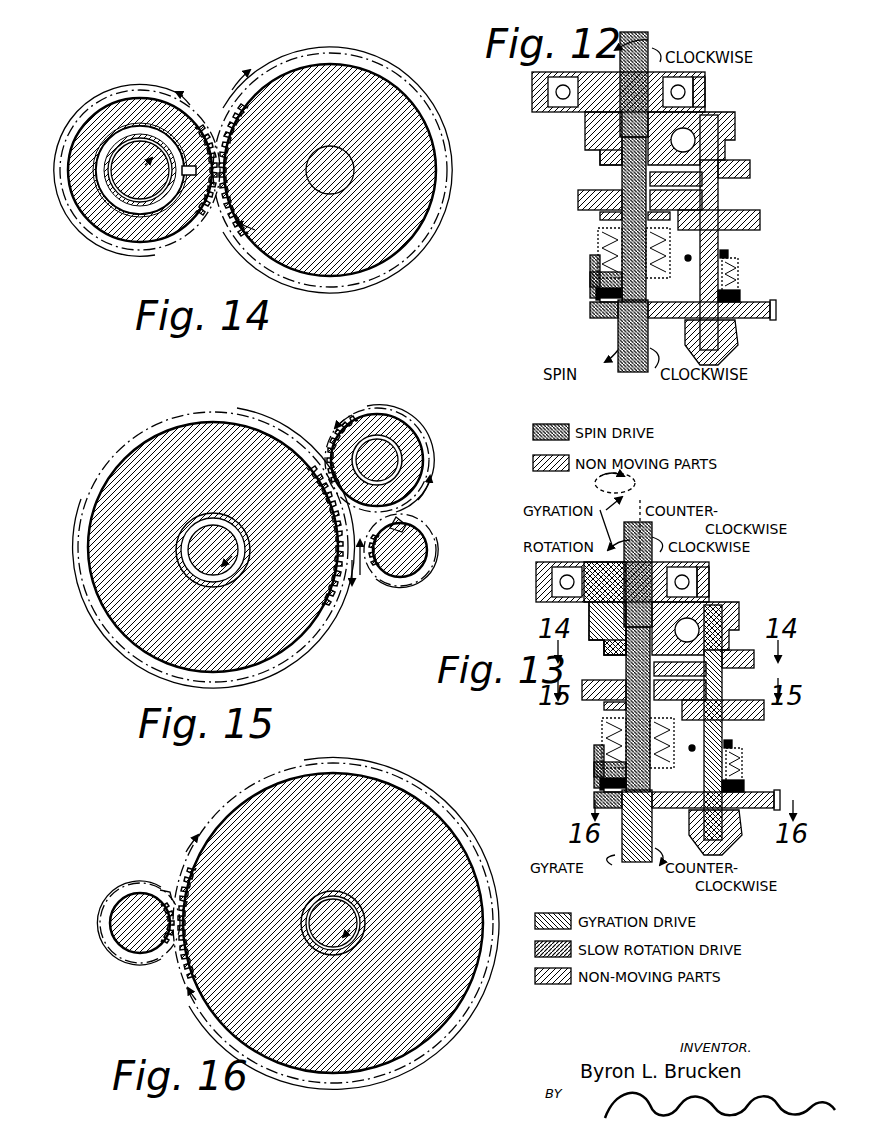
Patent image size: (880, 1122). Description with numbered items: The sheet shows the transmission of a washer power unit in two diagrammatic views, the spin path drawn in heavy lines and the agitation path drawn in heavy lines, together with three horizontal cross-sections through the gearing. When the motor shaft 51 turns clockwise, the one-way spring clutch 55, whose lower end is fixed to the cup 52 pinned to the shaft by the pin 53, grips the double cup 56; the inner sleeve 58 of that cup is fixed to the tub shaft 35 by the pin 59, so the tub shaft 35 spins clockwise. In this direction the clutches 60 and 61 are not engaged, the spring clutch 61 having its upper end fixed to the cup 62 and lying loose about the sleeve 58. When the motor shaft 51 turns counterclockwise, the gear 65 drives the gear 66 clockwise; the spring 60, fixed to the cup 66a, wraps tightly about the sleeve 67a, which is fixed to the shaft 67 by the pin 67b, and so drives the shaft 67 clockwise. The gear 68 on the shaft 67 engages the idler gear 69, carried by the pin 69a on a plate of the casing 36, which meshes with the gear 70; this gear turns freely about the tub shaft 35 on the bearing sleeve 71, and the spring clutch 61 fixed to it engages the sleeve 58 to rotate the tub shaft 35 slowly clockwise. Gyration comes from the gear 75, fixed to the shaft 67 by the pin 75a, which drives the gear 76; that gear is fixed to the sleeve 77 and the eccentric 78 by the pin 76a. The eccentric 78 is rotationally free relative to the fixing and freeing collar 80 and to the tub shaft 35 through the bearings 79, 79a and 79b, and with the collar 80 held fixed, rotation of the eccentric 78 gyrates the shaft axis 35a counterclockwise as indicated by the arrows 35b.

In FIG. 14, the tub shaft 35 is at (128, 190).
In FIG. 15, the tub shaft 35 is at (222, 538).
In FIG. 12, the tub shaft 35 is at (648, 42).
In FIG. 13, the tub shaft 35 is at (678, 657).
In FIG. 13, the shaft axis 35a is at (636, 482).
In FIG. 13, the arrows 35b is at (596, 486).
In FIG. 12, the casing 36 is at (740, 118).
In FIG. 13, the casing 36 is at (715, 622).
In FIG. 16, the motor shaft 51 is at (142, 942).
In FIG. 12, the motor shaft 51 is at (616, 341).
In FIG. 13, the motor shaft 51 is at (652, 826).
In FIG. 12, the cup 52 is at (598, 293).
In FIG. 13, the cup 52 is at (597, 780).
In FIG. 12, the pin 53 is at (606, 300).
In FIG. 13, the pin 53 is at (592, 797).
In FIG. 12, the one-way spring clutch 55 is at (590, 260).
In FIG. 13, the one-way spring clutch 55 is at (586, 754).
In FIG. 12, the double cup 56 is at (592, 276).
In FIG. 13, the double cup 56 is at (597, 769).
In FIG. 12, the inner sleeve 58 is at (598, 240).
In FIG. 13, the inner sleeve 58 is at (597, 742).
In FIG. 12, the pin 59 is at (668, 240).
In FIG. 12, the one-way spring clutch 60 is at (738, 278).
In FIG. 13, the one-way spring clutch 60 is at (762, 766).
In FIG. 12, the spring clutch 61 is at (648, 222).
In FIG. 13, the spring clutch 61 is at (675, 743).
In FIG. 12, the cup 62 is at (600, 215).
In FIG. 13, the cup 62 is at (597, 706).
In FIG. 16, the gear 65 is at (166, 893).
In FIG. 12, the gear 65 is at (612, 312).
In FIG. 13, the gear 65 is at (608, 809).
In FIG. 16, the gear 66 is at (428, 828).
In FIG. 12, the gear 66 is at (776, 310).
In FIG. 13, the gear 66 is at (716, 810).
In FIG. 12, the cup 66a is at (740, 296).
In FIG. 13, the cup 66a is at (748, 782).
In FIG. 14, the shaft 67 is at (347, 178).
In FIG. 15, the shaft 67 is at (427, 562).
In FIG. 16, the shaft 67 is at (345, 910).
In FIG. 12, the shaft 67 is at (720, 232).
In FIG. 13, the shaft 67 is at (727, 730).
In FIG. 12, the sleeve 67a is at (722, 250).
In FIG. 13, the sleeve 67a is at (730, 744).
In FIG. 12, the pin 67b is at (728, 258).
In FIG. 13, the pin 67b is at (747, 755).
In FIG. 15, the gear 68 is at (416, 514).
In FIG. 12, the gear 68 is at (705, 200).
In FIG. 13, the gear 68 is at (708, 686).
In FIG. 15, the idler gear 69 is at (380, 435).
In FIG. 12, the idler gear 69 is at (690, 182).
In FIG. 13, the idler gear 69 is at (680, 647).
In FIG. 15, the pin 69a is at (392, 455).
In FIG. 15, the gear 70 is at (297, 448).
In FIG. 12, the gear 70 is at (590, 195).
In FIG. 13, the gear 70 is at (597, 681).
In FIG. 15, the bearing sleeve 71 is at (212, 588).
In FIG. 14, the gear 75 is at (390, 238).
In FIG. 12, the gear 75 is at (735, 168).
In FIG. 13, the gear 75 is at (740, 648).
In FIG. 12, the pin 75a is at (684, 141).
In FIG. 14, the gear 76 is at (215, 127).
In FIG. 12, the gear 76 is at (618, 162).
In FIG. 13, the gear 76 is at (597, 652).
In FIG. 14, the pin 76a is at (194, 178).
In FIG. 14, the sleeve 77 is at (140, 126).
In FIG. 12, the sleeve 77 is at (620, 146).
In FIG. 13, the sleeve 77 is at (597, 628).
In FIG. 12, the eccentric 78 is at (588, 110).
In FIG. 13, the eccentric 78 is at (622, 608).
In FIG. 14, the bearing 79 is at (108, 190).
In FIG. 12, the bearing 79 is at (580, 155).
In FIG. 12, the bearing 79a is at (665, 96).
In FIG. 13, the bearing 79a is at (703, 577).
In FIG. 12, the bearing 79b is at (560, 92).
In FIG. 13, the bearing 79b is at (533, 584).
In FIG. 12, the fixing and freeing collar 80 is at (700, 95).
In FIG. 13, the fixing and freeing collar 80 is at (719, 582).